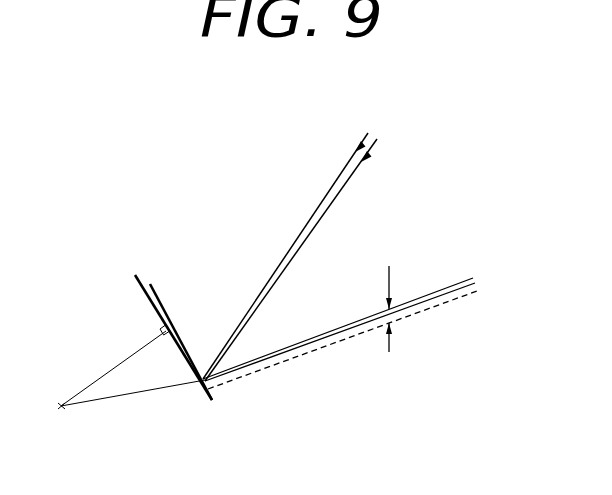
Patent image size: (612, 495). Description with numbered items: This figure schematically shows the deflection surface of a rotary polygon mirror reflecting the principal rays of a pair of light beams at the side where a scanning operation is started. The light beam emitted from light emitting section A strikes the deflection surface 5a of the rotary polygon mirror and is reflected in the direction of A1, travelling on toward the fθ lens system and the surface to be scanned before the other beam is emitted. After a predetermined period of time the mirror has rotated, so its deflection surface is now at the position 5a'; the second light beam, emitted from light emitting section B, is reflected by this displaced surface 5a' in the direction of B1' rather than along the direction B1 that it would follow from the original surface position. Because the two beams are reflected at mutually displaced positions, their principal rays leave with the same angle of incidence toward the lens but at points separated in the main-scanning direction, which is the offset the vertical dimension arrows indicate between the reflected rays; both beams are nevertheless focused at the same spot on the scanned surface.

The deflection surface 5a is at (184, 337).
The deflection surface 5a' is at (181, 364).
The light emitting section A is at (290, 241).
The light emitting section B is at (300, 250).
The reflection direction of beam from section A A1 is at (473, 287).
The reflection direction of beam from section B B1 is at (338, 307).
The reflection direction of beam from section B after deflection surface rotation B1' is at (358, 340).